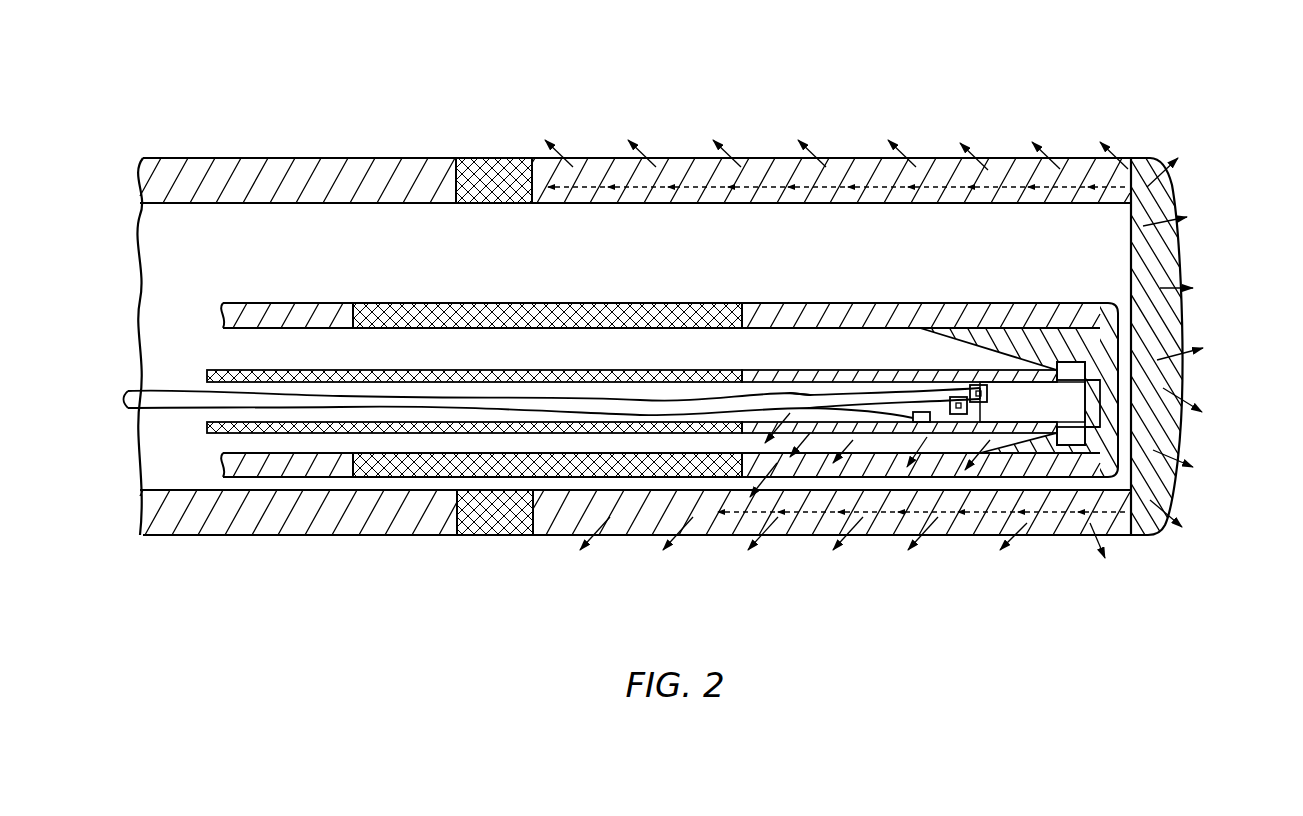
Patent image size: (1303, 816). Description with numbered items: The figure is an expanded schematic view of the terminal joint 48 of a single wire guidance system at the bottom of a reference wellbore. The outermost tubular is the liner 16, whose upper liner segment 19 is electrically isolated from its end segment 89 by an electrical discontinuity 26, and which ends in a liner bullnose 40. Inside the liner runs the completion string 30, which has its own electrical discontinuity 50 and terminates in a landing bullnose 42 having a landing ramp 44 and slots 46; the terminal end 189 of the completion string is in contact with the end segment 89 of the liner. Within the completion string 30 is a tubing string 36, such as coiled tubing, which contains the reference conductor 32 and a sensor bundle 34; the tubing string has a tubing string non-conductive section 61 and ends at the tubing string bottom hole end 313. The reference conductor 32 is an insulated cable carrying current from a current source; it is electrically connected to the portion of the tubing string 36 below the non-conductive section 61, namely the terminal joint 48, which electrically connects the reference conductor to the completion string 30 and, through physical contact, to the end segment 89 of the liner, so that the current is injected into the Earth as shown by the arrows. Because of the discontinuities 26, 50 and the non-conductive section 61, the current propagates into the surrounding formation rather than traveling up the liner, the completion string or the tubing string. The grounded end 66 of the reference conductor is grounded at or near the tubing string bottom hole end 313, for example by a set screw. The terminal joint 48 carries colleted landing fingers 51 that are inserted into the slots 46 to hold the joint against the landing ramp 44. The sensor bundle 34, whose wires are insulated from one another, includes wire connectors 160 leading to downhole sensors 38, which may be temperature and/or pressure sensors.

The liner 16 is at (328, 157).
The upper liner segment 19 is at (375, 157).
The electrical discontinuity 26 is at (470, 157).
The end segment 89 is at (1087, 157).
The liner bullnose 40 is at (1178, 248).
The completion string 30 is at (298, 303).
The terminal end 189 is at (757, 303).
The electrical discontinuity 50 is at (488, 303).
The tubing string bottom hole end 313 is at (1100, 388).
The landing ramp 44 is at (980, 340).
The landing bullnose 42 is at (1097, 372).
The slots 46 is at (1082, 363).
The colleted landing fingers 51 is at (1085, 413).
The tubing string 36 is at (377, 370).
The reference conductor 32 is at (890, 434).
The tubing string non-conductive section 61 is at (688, 434).
The sensor bundle 34 is at (160, 390).
The terminal joint 48 is at (802, 368).
The wire connectors 160 is at (872, 392).
The grounded end 66 is at (925, 423).
The downhole sensors 38 is at (990, 397).